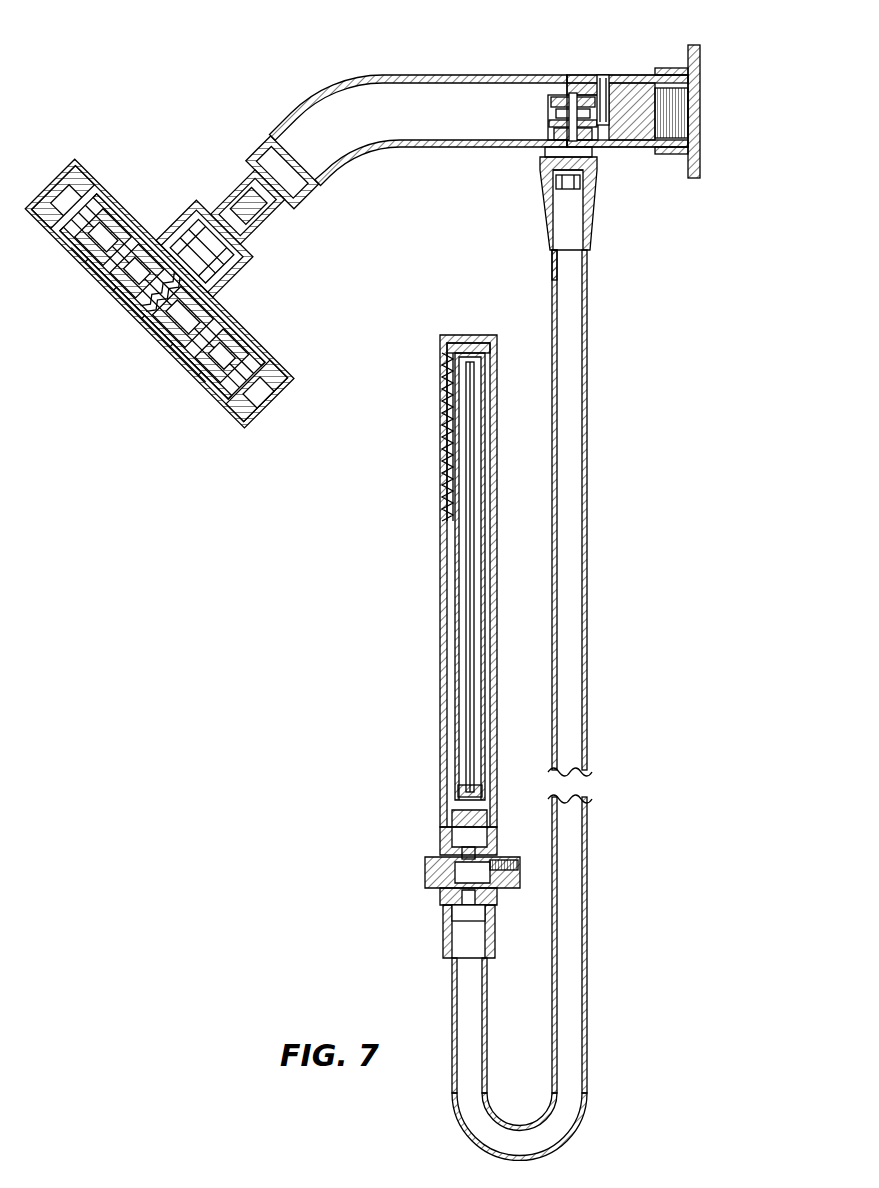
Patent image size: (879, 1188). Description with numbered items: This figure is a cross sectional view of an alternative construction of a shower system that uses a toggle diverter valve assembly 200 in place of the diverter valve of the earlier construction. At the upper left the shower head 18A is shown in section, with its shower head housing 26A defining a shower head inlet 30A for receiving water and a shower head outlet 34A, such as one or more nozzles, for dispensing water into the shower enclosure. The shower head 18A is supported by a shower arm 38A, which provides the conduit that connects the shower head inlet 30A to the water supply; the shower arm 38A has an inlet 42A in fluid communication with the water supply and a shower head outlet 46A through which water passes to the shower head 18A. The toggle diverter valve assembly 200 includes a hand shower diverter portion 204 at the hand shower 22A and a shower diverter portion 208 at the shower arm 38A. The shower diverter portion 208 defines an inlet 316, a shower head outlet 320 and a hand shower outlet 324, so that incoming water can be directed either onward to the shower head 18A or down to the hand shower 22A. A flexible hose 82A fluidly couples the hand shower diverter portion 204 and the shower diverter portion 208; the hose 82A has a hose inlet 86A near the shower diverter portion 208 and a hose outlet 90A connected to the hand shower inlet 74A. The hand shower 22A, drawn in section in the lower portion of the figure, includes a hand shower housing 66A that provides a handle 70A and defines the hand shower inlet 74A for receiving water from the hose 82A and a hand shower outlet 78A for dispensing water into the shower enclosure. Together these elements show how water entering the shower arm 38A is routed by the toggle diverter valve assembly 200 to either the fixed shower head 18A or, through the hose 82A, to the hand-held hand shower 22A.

The shower head 18A is at (36, 146).
The hand shower 22A is at (399, 646).
The shower head housing 26A is at (262, 396).
The shower head inlet 30A is at (180, 176).
The shower head outlet 34A is at (109, 364).
The shower arm 38A is at (419, 110).
The inlet 42A is at (724, 92).
The shower head outlet 46A is at (253, 116).
The hand shower housing 66A is at (425, 595).
The handle 70A is at (498, 622).
The hand shower inlet 74A is at (404, 790).
The hand shower outlet 78A is at (409, 447).
The flexible hose 82A is at (560, 699).
The hose inlet 86A is at (528, 238).
The hose outlet 90A is at (412, 963).
The toggle diverter valve assembly 200 is at (364, 868).
The hand shower diverter portion 204 is at (486, 846).
The shower diverter portion 208 is at (602, 174).
The inlet 316 is at (601, 110).
The shower head outlet 320 is at (529, 96).
The hand shower outlet 324 is at (514, 164).